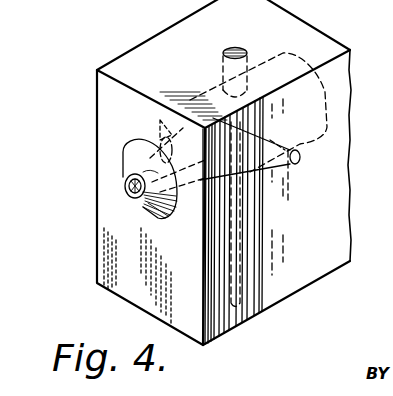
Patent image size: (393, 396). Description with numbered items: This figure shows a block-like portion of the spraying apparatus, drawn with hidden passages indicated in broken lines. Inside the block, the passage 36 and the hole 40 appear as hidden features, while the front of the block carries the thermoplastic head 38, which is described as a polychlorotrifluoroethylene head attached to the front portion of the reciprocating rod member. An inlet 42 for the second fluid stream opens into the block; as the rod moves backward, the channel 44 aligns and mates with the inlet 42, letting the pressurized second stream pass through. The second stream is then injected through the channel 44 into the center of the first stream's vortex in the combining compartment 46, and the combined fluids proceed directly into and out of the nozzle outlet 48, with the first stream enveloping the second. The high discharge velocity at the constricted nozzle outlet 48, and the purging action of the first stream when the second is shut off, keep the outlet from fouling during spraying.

The block body 36 is at (182, 42).
The thermoplastic head 38 is at (317, 103).
The hidden slot 40 is at (240, 253).
The inlet 42 is at (300, 152).
The channel 44 is at (160, 142).
The combining compartment 46 is at (163, 136).
The nozzle outlet 48 is at (128, 185).